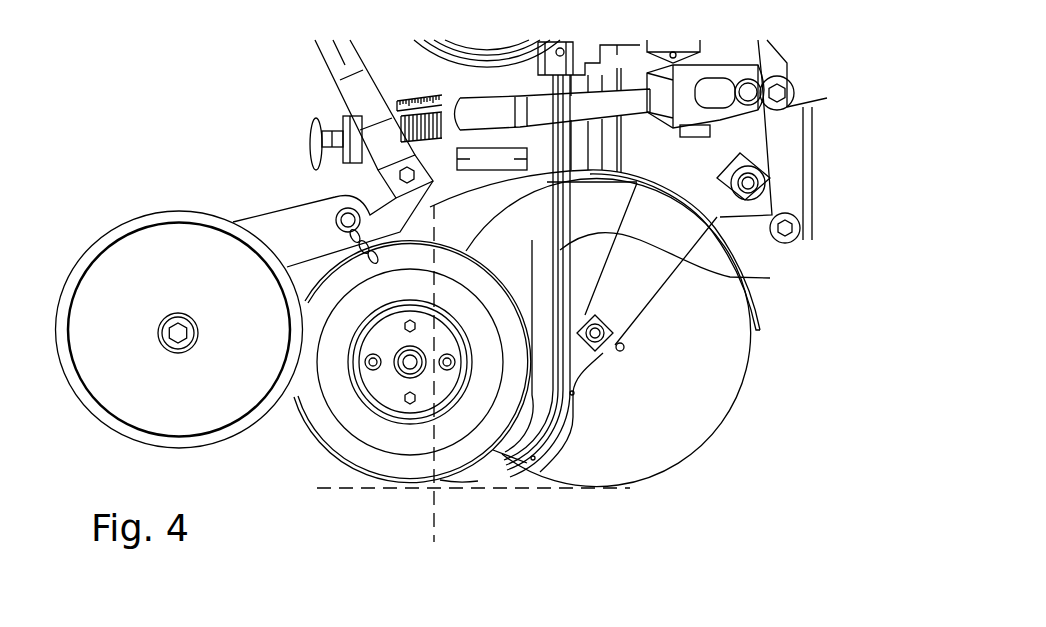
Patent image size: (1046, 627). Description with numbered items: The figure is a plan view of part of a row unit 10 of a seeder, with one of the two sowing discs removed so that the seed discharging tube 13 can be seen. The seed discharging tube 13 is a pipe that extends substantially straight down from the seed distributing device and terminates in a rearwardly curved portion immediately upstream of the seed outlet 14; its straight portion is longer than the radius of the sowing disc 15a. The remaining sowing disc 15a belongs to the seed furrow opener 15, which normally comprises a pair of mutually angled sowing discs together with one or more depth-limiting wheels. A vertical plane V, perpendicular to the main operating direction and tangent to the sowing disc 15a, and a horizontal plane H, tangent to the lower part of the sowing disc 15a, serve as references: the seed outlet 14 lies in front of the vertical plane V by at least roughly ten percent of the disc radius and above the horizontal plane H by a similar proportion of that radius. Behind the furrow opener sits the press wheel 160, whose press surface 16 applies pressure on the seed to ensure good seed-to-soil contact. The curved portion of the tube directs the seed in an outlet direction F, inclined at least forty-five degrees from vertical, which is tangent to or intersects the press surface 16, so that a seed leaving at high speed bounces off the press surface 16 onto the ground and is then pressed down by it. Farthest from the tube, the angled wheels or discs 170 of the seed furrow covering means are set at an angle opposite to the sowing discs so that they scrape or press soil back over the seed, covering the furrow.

The row unit 10 is at (198, 96).
The seed discharging tube 13 is at (658, 247).
The seed outlet 14 is at (527, 455).
The seed furrow opener 15 is at (733, 472).
The sowing disc 15a is at (727, 373).
The press surface 16 is at (459, 486).
The press wheel 160 is at (360, 455).
The angled wheels or discs 170 is at (155, 397).
The direction of flow F is at (492, 472).
The vertical plane V is at (433, 516).
The horizontal plane H is at (593, 489).